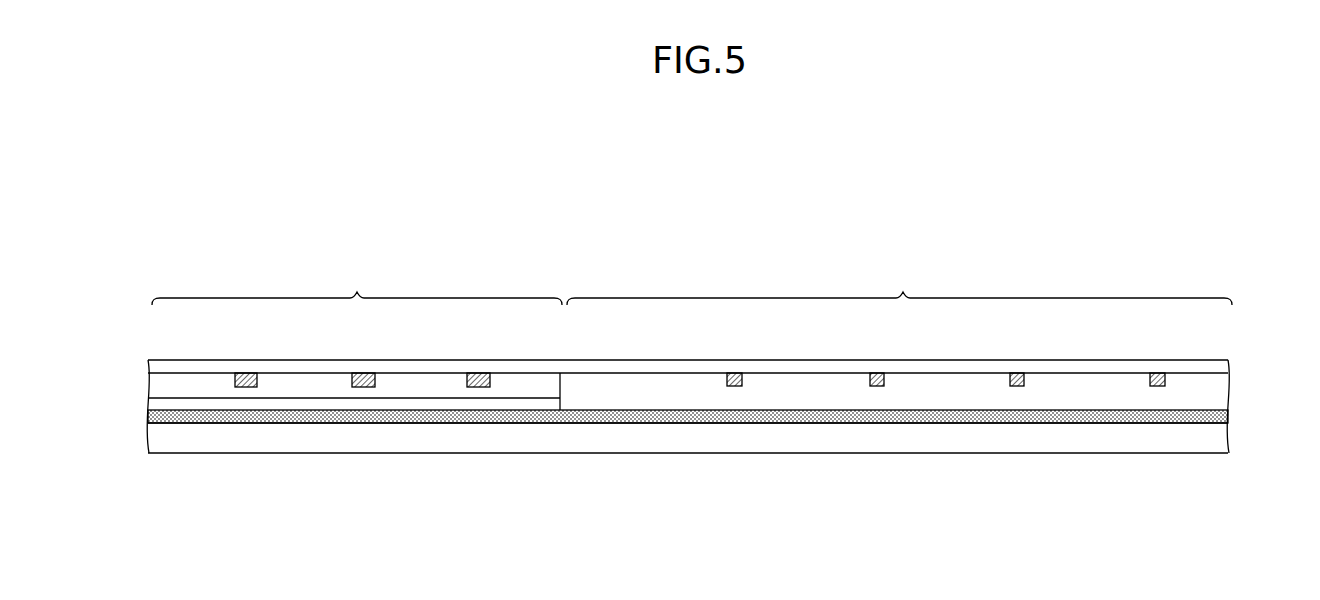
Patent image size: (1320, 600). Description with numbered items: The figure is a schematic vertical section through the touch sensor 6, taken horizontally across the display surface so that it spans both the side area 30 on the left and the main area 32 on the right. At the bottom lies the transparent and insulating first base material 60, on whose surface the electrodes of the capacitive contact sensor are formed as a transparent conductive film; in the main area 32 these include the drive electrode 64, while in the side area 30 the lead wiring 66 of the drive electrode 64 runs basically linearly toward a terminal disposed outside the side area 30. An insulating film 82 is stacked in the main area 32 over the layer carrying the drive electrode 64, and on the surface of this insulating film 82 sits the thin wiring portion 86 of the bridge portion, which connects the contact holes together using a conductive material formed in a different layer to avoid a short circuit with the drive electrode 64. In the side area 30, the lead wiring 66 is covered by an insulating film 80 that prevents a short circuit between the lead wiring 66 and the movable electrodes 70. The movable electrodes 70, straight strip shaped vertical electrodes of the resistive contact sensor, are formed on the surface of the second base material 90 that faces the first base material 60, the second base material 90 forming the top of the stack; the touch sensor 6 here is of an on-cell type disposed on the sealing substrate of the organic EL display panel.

The touch sensor 6 is at (1238, 330).
The side area 30 is at (357, 283).
The main area 32 is at (899, 283).
The first base material 60 is at (1218, 437).
The drive electrode 64 is at (950, 424).
The lead wiring 66 is at (380, 424).
The movable electrode 70 is at (243, 373).
The insulating film 80 is at (148, 399).
The insulating film 82 is at (1218, 399).
The thin wiring portion 86 is at (742, 380).
The second base material 90 is at (1222, 367).